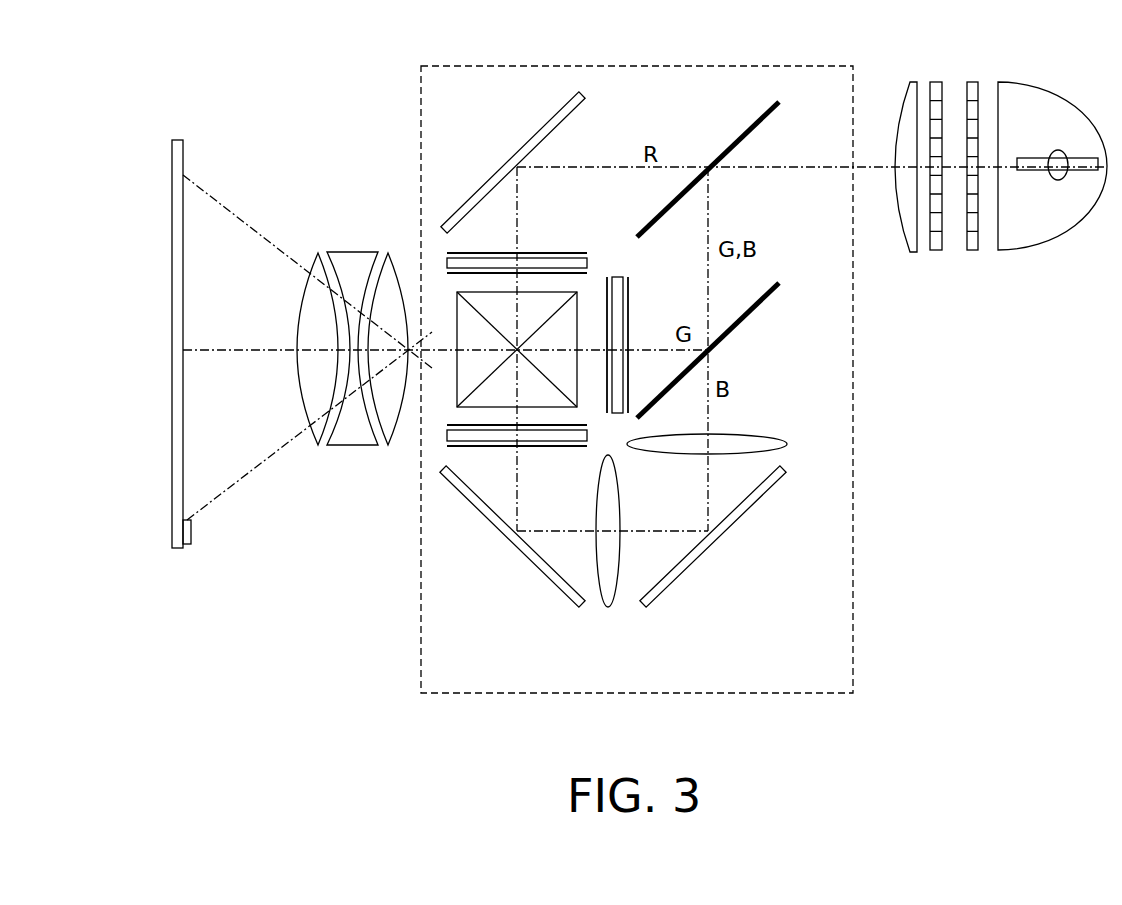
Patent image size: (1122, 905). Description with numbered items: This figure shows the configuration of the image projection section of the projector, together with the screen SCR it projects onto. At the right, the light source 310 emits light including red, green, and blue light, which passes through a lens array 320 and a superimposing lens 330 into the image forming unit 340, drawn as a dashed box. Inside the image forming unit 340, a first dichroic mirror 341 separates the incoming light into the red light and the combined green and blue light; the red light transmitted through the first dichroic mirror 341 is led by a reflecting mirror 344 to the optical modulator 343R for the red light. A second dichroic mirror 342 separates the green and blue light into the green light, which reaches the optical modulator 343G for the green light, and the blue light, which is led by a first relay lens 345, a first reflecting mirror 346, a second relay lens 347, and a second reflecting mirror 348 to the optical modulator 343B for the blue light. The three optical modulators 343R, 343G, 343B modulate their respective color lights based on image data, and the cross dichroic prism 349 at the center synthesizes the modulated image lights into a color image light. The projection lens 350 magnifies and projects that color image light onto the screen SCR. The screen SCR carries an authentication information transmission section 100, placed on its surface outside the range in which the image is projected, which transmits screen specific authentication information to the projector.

The screen SCR is at (185, 160).
The authentication information transmission section 100 is at (188, 546).
The light source 310 is at (1023, 250).
The lens array 320 is at (971, 82).
The superimposing lens 330 is at (912, 82).
The image forming unit 340 is at (645, 66).
The first dichroic mirror 341 is at (770, 110).
The second dichroic mirror 342 is at (762, 300).
The optical modulator for the red light 343R is at (530, 258).
The optical modulator for the green light 343G is at (622, 278).
The optical modulator for the blue light 343B is at (530, 446).
The reflecting mirror 344 is at (500, 163).
The first relay lens 345 is at (760, 435).
The first reflecting mirror 346 is at (750, 516).
The second relay lens 347 is at (608, 610).
The second reflecting mirror 348 is at (512, 548).
The cross dichroic prism 349 is at (457, 292).
The projection lens 350 is at (400, 247).